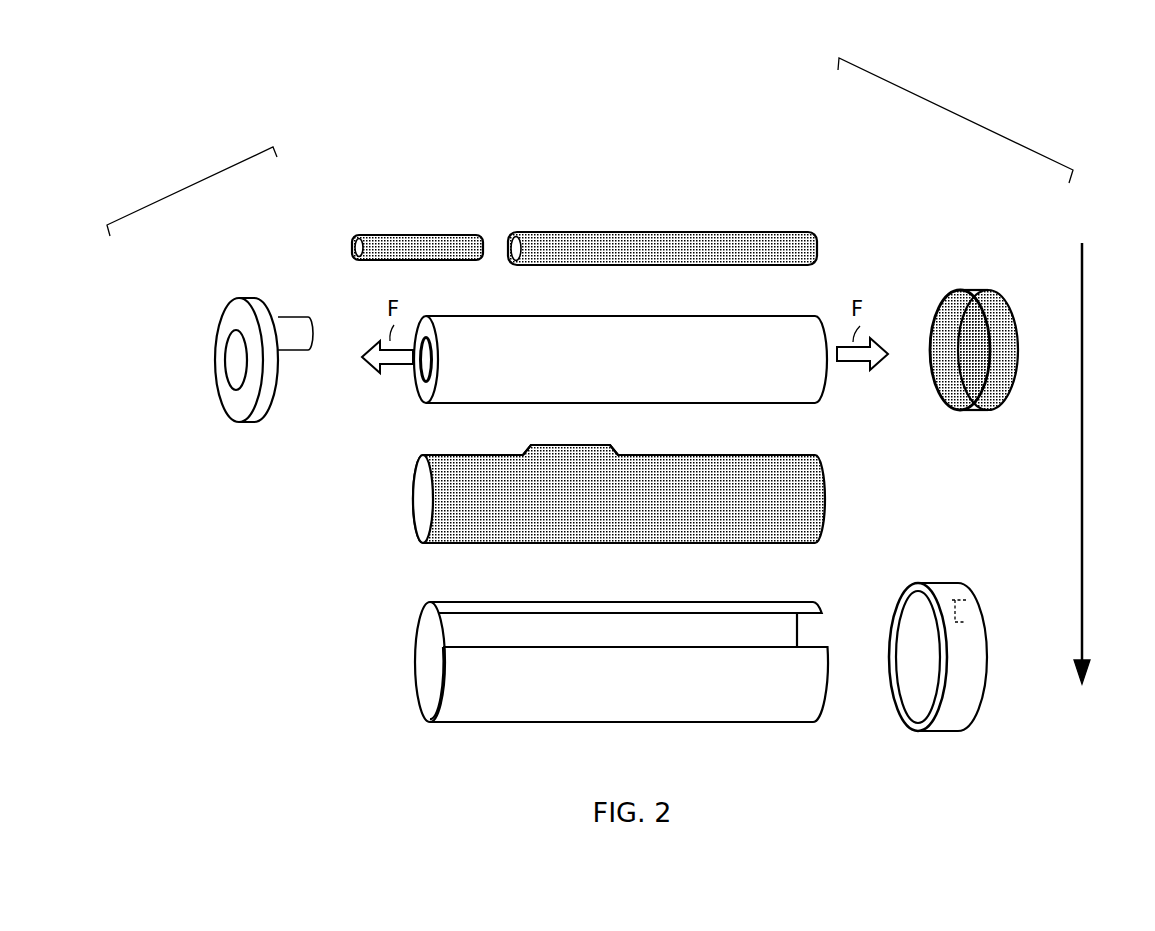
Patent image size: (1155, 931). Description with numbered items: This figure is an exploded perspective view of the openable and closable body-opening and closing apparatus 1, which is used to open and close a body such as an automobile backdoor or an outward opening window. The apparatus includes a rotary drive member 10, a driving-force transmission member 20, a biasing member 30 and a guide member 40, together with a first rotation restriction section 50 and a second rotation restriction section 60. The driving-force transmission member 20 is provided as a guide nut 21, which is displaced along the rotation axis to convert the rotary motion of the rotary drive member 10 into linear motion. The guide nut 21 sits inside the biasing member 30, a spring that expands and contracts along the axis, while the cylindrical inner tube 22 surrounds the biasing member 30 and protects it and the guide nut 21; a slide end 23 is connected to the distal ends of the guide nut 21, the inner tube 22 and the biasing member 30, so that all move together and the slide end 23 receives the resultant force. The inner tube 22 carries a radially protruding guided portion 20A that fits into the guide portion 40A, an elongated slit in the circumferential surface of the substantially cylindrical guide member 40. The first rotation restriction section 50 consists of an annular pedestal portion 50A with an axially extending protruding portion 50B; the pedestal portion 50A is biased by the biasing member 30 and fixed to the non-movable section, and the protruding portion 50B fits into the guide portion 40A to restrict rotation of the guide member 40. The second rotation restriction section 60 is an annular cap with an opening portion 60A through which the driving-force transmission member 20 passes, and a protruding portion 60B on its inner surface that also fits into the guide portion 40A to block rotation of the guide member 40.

The openable and closable body-opening and closing apparatus 1 is at (1102, 120).
The rotary drive member 10 is at (432, 235).
The driving-force transmission member 20 is at (958, 117).
The guided portion 20A is at (598, 447).
The guide nut 21 is at (783, 232).
The inner tube 22 is at (825, 463).
The slide end 23 is at (975, 290).
The biasing member 30 is at (742, 326).
The guide member 40 is at (808, 602).
The guide portion 40A is at (596, 638).
The first rotation restriction section 50 is at (188, 188).
The pedestal portion 50A is at (203, 358).
The protruding portion 50B is at (298, 306).
The second rotation restriction section 60 is at (893, 708).
The opening portion 60A is at (923, 679).
The protruding portion 60B is at (967, 620).